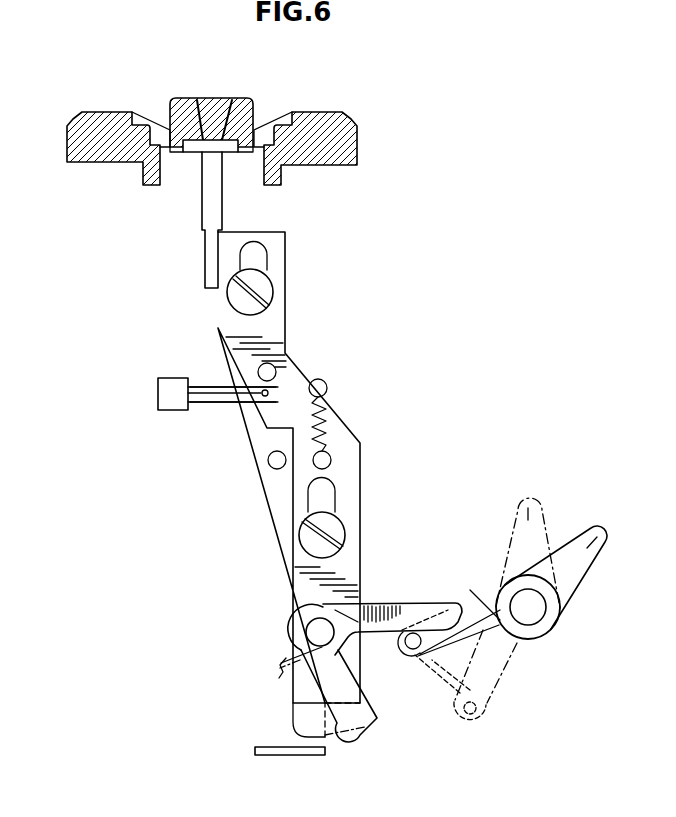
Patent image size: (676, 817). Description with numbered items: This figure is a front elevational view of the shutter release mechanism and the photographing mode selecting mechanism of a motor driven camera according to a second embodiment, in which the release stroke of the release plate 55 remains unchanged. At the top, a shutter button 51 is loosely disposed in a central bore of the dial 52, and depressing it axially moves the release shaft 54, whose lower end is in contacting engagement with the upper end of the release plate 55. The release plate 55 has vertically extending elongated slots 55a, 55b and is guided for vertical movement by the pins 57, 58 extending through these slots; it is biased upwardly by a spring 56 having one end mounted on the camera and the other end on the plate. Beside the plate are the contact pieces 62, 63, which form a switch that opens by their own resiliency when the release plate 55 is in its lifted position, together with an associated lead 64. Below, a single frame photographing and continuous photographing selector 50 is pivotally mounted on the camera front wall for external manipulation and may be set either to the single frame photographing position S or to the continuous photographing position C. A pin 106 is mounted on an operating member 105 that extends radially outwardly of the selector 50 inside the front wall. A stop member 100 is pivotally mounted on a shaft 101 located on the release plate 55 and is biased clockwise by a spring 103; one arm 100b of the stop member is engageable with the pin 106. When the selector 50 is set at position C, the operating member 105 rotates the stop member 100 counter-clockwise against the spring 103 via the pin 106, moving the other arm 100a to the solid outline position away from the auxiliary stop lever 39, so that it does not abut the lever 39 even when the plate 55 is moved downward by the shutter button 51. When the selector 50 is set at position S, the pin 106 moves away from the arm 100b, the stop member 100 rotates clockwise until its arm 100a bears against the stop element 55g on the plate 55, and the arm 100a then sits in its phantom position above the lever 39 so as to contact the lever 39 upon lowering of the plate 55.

The dial 52 is at (82, 118).
The shutter button 51 is at (183, 102).
The release shaft 54 is at (176, 112).
The release plate 55 is at (347, 470).
The elongated slot 55a is at (263, 255).
The elongated slot 55b is at (307, 497).
The stop element 55g is at (285, 677).
The spring 56 is at (335, 428).
The pin 57 is at (267, 290).
The pin 58 is at (305, 540).
The contact piece 62 is at (217, 383).
The contact piece 63 is at (207, 404).
The lead 64 is at (232, 405).
The stop member 100 is at (375, 612).
The arm of stop member 100a is at (360, 727).
The arm of stop member 100b is at (462, 602).
The shaft 101 is at (314, 623).
The spring 103 is at (293, 660).
The operating member 105 is at (477, 643).
The pin 106 is at (410, 653).
The single frame photographing and continuous photographing selector 50 is at (508, 542).
The single frame photographing position S is at (528, 541).
The continuous photographing position C is at (561, 568).
The auxiliary stop lever 39 is at (280, 755).